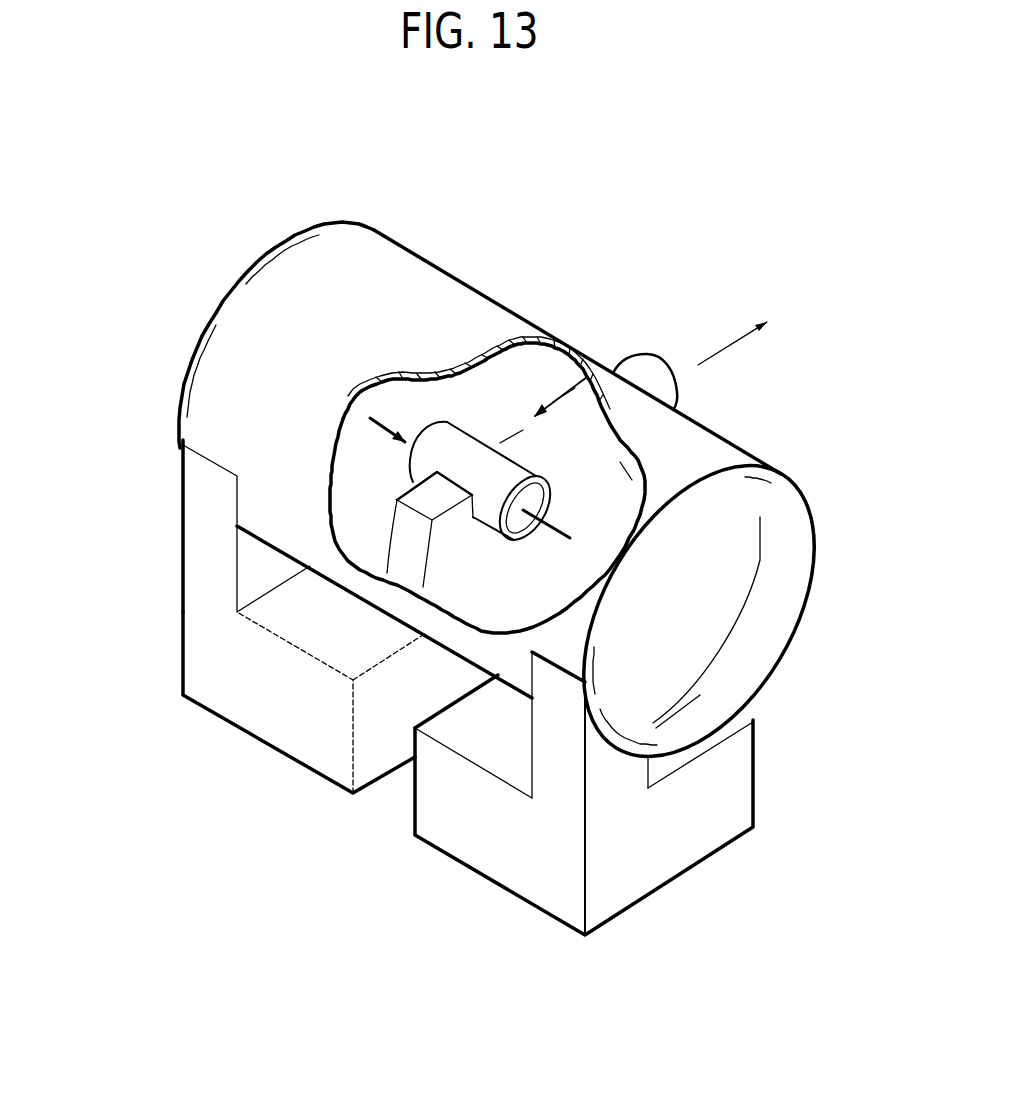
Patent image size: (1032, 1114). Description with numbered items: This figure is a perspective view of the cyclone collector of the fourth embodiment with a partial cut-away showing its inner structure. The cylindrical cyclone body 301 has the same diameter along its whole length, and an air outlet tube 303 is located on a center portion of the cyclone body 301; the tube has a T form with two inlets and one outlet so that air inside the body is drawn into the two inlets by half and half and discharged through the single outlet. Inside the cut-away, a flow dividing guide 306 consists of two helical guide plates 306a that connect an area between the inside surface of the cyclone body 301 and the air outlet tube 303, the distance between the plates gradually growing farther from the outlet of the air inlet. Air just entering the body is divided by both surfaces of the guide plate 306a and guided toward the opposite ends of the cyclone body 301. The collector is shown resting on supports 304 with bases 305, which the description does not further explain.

The cyclone body 301 is at (400, 272).
The air outlet tube 303 is at (650, 370).
The support arm 304 is at (207, 522).
The support base 305 is at (222, 693).
The flow dividing guide 306 is at (535, 414).
The guide plate 306a is at (453, 575).